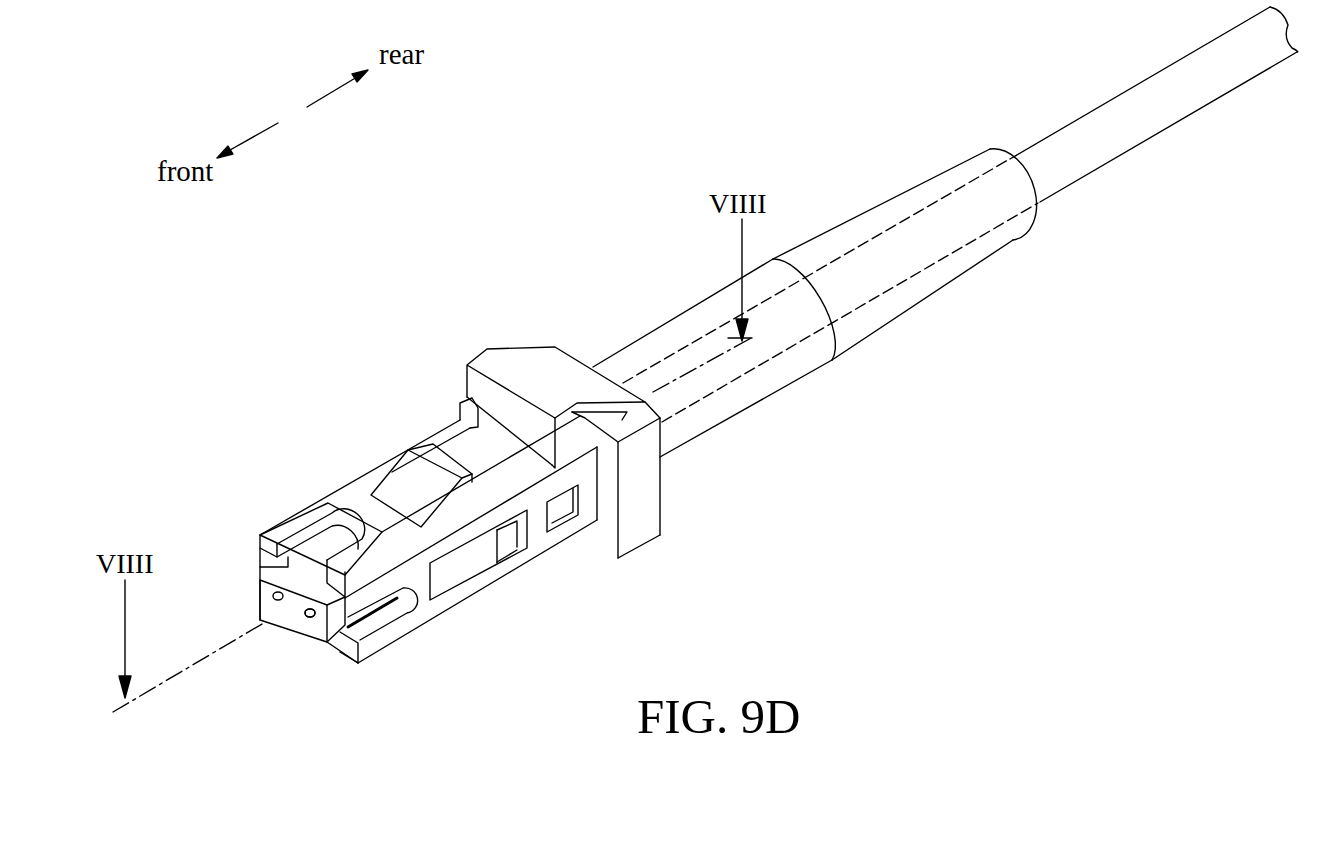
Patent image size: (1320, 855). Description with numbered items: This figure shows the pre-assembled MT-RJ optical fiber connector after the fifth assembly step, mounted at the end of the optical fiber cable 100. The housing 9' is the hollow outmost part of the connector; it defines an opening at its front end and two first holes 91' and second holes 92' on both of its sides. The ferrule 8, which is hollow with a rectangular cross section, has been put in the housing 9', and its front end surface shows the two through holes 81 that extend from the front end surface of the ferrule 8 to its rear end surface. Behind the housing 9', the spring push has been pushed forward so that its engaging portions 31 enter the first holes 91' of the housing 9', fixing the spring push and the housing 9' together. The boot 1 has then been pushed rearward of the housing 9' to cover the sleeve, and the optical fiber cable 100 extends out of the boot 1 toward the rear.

The boot 1 is at (812, 380).
The ferrule 8 is at (250, 560).
The through holes 81 is at (312, 620).
The housing 9' is at (428, 526).
The first holes 91' is at (583, 562).
The second holes 92' is at (500, 589).
The engaging portion 31 is at (627, 556).
The optical fiber cable 100 is at (1140, 127).